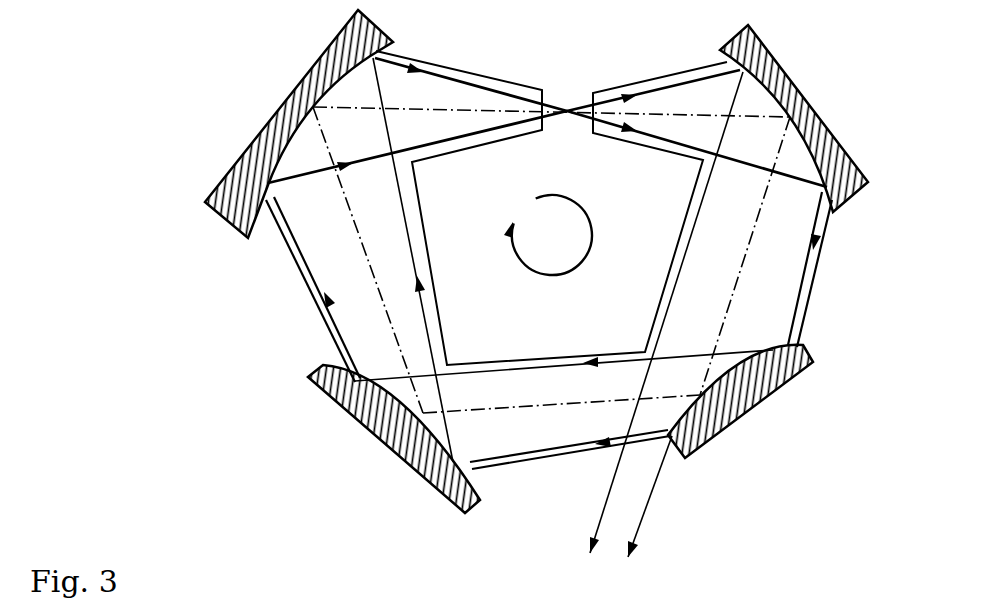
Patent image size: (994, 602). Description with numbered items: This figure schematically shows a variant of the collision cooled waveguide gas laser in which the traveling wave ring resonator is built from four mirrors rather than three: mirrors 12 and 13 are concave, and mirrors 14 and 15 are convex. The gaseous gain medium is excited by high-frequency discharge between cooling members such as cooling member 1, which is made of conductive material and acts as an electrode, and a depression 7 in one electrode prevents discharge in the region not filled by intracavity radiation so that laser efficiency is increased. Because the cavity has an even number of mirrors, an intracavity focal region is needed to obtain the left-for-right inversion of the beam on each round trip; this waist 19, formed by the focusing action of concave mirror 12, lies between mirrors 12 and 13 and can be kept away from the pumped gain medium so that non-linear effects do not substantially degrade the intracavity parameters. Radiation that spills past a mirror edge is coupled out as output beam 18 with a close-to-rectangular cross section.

The cooling member 1 is at (327, 331).
The depression 7 is at (562, 242).
The concave mirror 12 is at (293, 97).
The concave mirror 13 is at (800, 118).
The convex mirror 14 is at (743, 415).
The convex mirror 15 is at (390, 440).
The output beam 18 is at (620, 507).
The waist 19 is at (567, 108).